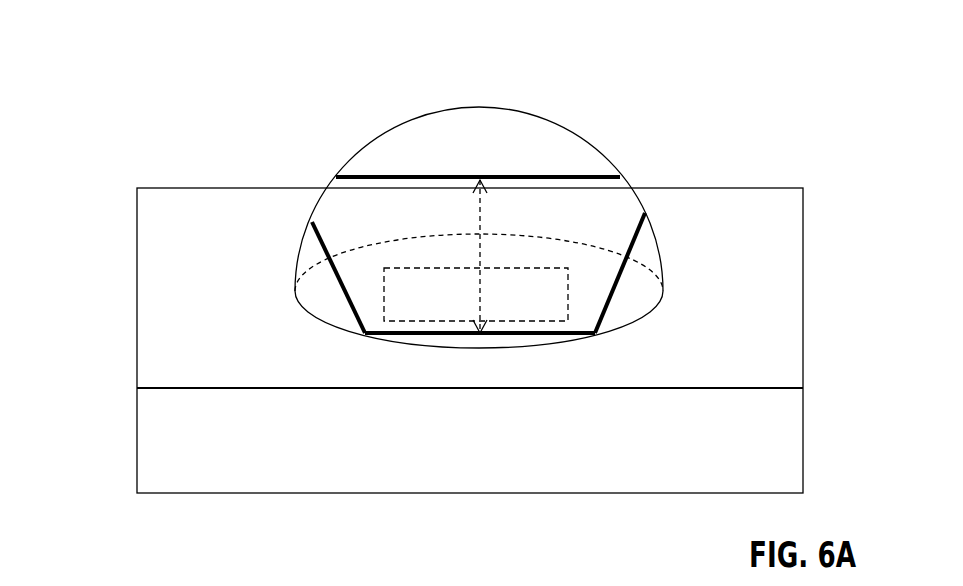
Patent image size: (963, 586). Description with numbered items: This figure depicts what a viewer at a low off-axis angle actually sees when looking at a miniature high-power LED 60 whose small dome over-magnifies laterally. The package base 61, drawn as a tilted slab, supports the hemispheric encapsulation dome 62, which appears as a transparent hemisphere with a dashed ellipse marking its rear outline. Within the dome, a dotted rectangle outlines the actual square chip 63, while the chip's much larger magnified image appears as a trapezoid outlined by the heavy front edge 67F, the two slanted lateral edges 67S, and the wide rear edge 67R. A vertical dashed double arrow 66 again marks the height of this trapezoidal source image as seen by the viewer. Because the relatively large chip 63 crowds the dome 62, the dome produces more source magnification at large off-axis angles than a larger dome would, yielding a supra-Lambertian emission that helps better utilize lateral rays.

The LED 60 is at (150, 80).
The package base 61 is at (153, 217).
The hemispheric encapsulation dome 62 is at (406, 109).
The square chip 63 is at (476, 294).
The double arrow 66 is at (475, 252).
The rear edge 67R is at (510, 172).
The lateral edges 67S is at (622, 288).
The front edge 67F is at (507, 338).